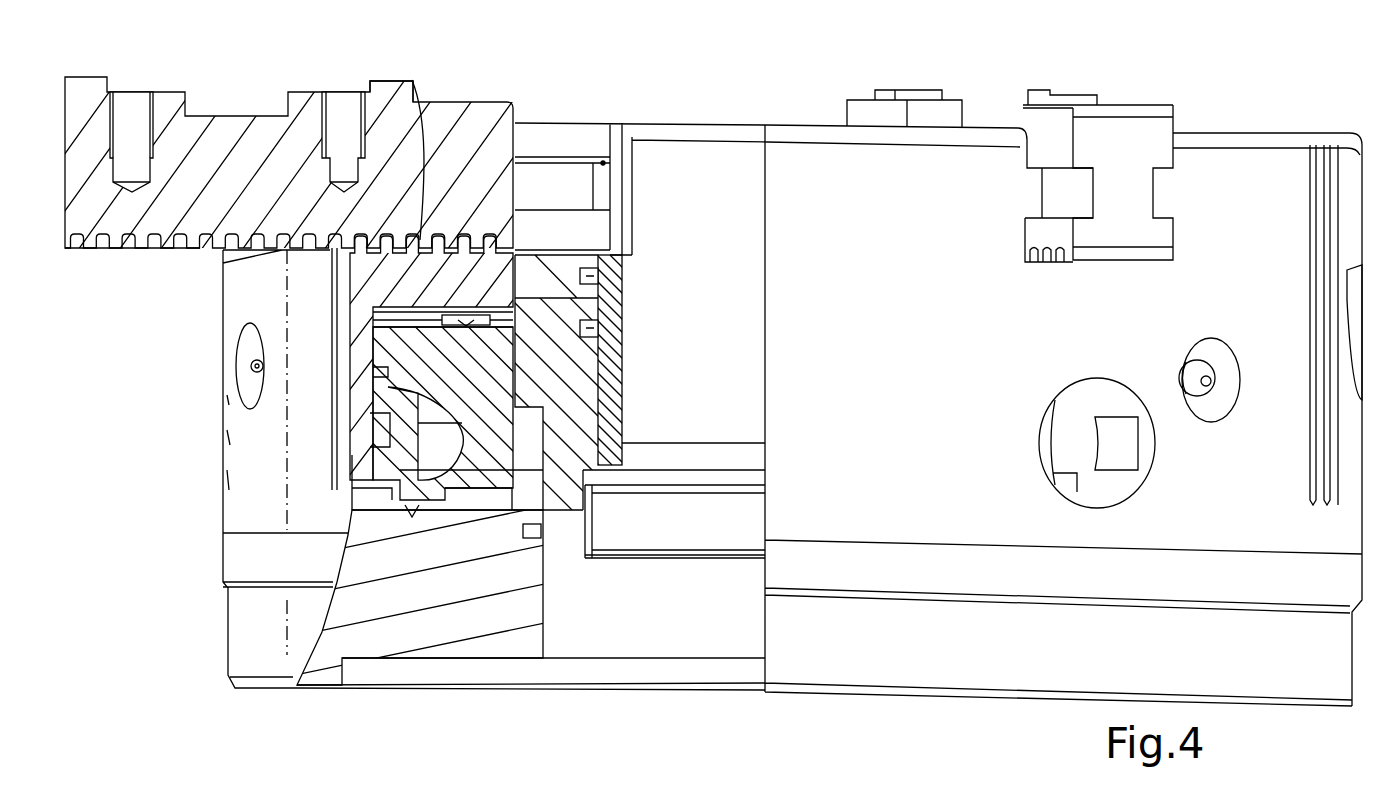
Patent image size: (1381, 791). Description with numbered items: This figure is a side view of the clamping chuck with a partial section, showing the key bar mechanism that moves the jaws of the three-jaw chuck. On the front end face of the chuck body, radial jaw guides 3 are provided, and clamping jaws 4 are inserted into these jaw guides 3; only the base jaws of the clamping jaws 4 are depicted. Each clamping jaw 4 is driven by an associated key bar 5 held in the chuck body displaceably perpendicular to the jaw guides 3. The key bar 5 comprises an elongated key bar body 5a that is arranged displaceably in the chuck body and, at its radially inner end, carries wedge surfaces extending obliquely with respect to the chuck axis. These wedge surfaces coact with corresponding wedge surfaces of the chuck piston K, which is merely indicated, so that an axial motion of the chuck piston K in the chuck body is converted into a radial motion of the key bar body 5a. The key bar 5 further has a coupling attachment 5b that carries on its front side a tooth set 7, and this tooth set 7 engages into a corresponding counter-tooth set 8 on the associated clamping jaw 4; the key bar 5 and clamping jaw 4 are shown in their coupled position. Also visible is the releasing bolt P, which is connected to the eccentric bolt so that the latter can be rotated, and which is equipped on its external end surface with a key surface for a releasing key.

The jaw guide 3 is at (544, 145).
The clamping jaw 4 is at (272, 143).
The key bar 5 is at (383, 344).
The key bar body 5a is at (418, 518).
The coupling attachment 5b is at (483, 275).
The tooth set 7 is at (405, 100).
The counter-tooth set 8 is at (181, 250).
The releasing bolt P is at (357, 468).
The chuck piston K is at (557, 530).